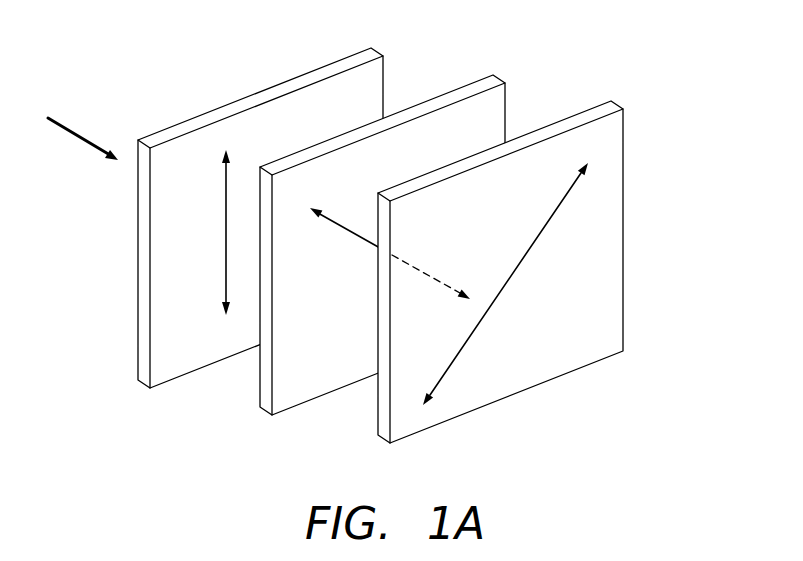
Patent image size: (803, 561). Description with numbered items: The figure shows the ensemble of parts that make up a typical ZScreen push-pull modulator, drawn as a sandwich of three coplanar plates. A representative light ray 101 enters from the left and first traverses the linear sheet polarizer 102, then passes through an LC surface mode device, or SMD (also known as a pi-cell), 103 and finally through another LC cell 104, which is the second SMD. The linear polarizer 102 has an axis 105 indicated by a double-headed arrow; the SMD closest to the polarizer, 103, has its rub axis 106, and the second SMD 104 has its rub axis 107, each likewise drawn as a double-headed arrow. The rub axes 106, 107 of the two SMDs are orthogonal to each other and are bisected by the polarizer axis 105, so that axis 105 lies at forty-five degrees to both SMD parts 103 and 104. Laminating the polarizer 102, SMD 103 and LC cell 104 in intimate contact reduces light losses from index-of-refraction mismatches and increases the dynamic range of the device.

The representative light ray 101 is at (76, 130).
The linear sheet polarizer 102 is at (256, 72).
The LC surface mode device (SMD, pi-cell) 103 is at (502, 75).
The LC cell (second SMD) 104 is at (623, 160).
The axis of linear polarizer 105 is at (226, 234).
The axis of first SMD 106 is at (345, 229).
The axis of second SMD 107 is at (449, 375).